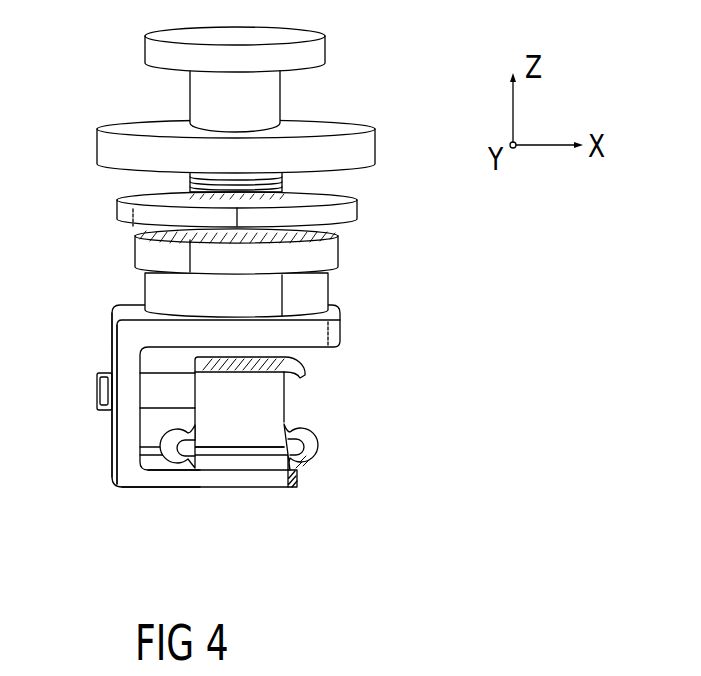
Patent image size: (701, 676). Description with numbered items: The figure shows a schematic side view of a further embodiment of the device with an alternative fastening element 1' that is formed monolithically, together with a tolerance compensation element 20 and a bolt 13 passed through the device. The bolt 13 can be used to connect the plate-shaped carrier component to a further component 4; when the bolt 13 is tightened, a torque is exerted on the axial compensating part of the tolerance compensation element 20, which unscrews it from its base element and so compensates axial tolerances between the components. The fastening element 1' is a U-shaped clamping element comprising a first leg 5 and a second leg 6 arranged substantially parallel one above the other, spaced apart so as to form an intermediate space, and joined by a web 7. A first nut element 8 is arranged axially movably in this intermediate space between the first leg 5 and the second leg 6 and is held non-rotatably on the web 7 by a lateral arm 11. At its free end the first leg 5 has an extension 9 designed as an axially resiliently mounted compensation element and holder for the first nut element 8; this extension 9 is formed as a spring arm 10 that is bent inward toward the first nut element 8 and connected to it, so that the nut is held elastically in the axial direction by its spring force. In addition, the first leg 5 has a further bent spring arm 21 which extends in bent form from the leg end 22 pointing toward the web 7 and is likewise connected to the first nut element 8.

The fastening element 1' is at (270, 299).
The further component 4 is at (117, 147).
The first leg 5 is at (273, 480).
The second leg 6 is at (318, 332).
The web 7 is at (122, 353).
The first nut element 8 is at (263, 417).
The extension 9 is at (293, 478).
The spring arm 10 is at (323, 452).
The lateral arm 11 is at (152, 400).
The bolt 13 is at (312, 53).
The tolerance compensation element 20 is at (327, 252).
The further bent spring arm 21 is at (158, 440).
The leg end 22 is at (158, 478).